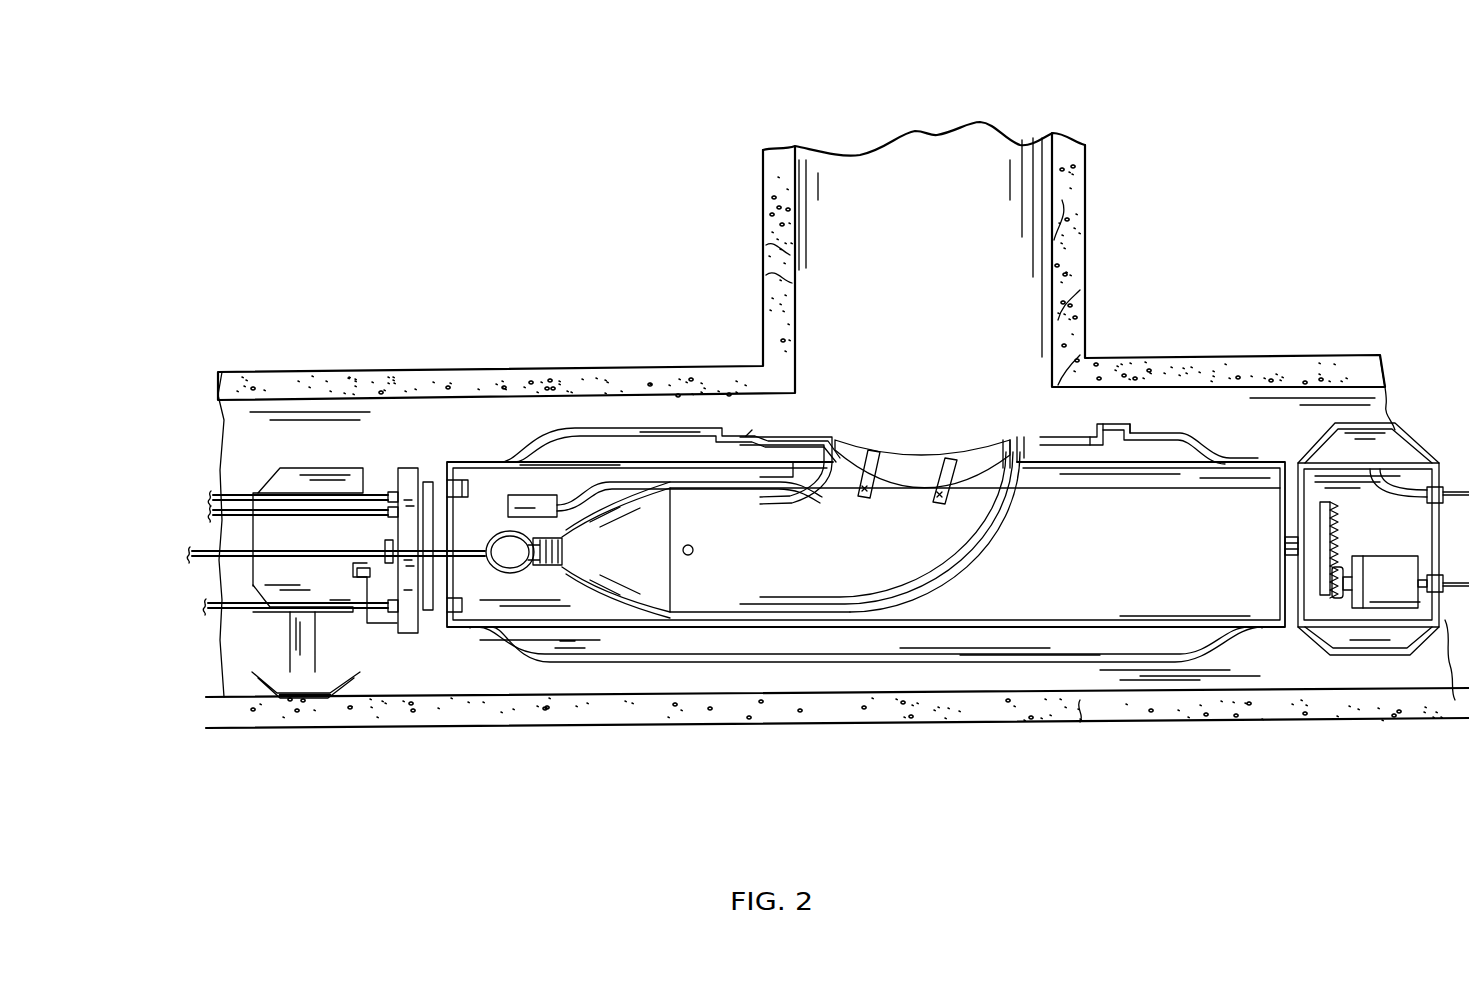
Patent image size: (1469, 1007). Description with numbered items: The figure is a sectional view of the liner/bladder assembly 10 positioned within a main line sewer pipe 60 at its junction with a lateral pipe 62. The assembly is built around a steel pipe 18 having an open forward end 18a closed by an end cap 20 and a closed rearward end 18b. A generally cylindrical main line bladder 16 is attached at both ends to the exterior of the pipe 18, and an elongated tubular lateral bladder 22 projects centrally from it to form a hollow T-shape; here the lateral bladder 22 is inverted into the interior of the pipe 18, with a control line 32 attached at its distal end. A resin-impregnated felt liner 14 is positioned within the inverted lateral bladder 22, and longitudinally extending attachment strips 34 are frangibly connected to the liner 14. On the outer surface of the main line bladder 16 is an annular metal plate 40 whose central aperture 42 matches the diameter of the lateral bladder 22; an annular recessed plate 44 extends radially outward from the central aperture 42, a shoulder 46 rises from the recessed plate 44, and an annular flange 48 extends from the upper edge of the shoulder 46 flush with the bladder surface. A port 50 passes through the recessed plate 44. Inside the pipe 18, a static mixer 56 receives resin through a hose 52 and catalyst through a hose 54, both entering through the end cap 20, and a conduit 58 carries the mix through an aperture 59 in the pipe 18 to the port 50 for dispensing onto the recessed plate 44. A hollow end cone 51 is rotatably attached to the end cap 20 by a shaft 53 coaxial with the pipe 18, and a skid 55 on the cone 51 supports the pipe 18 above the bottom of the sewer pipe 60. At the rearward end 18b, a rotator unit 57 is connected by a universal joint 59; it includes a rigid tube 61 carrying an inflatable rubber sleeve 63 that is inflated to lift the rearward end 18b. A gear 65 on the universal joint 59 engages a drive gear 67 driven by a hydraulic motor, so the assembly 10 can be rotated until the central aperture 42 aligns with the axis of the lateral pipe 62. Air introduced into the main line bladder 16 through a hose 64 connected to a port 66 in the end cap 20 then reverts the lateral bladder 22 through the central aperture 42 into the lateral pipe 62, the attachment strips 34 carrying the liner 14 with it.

The liner/bladder assembly 10 is at (1028, 134).
The tubular liner 14 is at (790, 550).
The main line bladder 16 is at (1128, 660).
The steel pipe 18 is at (1070, 622).
The open forward end 18a is at (456, 631).
The closed rearward end 18b is at (1265, 625).
The end cap 20 is at (408, 475).
The lateral bladder 22 is at (1000, 528).
The control line 32 is at (215, 555).
The attachment strips 34 is at (935, 456).
The annular metal plate 40 is at (1095, 425).
The central aperture 42 is at (840, 440).
The annular recessed plate 44 is at (1040, 455).
The shoulder 46 is at (1092, 448).
The annular flange 48 is at (1113, 425).
The port 50 is at (790, 432).
The end cone 51 is at (300, 468).
The hose 52 is at (240, 492).
The shaft 53 is at (371, 577).
The hose 54 is at (325, 512).
The skid 55 is at (308, 675).
The static mixer 56 is at (525, 505).
The rotator unit 57 is at (1394, 414).
The conduit 58 is at (670, 478).
The universal joint 59 is at (772, 465).
The main line sewer pipe 60 is at (1280, 357).
The rigid tube 61 is at (1297, 610).
The lateral pipe 62 is at (1085, 180).
The inflatable rubber sleeve 63 is at (1400, 432).
The hose 64 is at (220, 612).
The gear 65 is at (1398, 600).
The port 66 is at (386, 605).
The drive gear 67 is at (1340, 595).